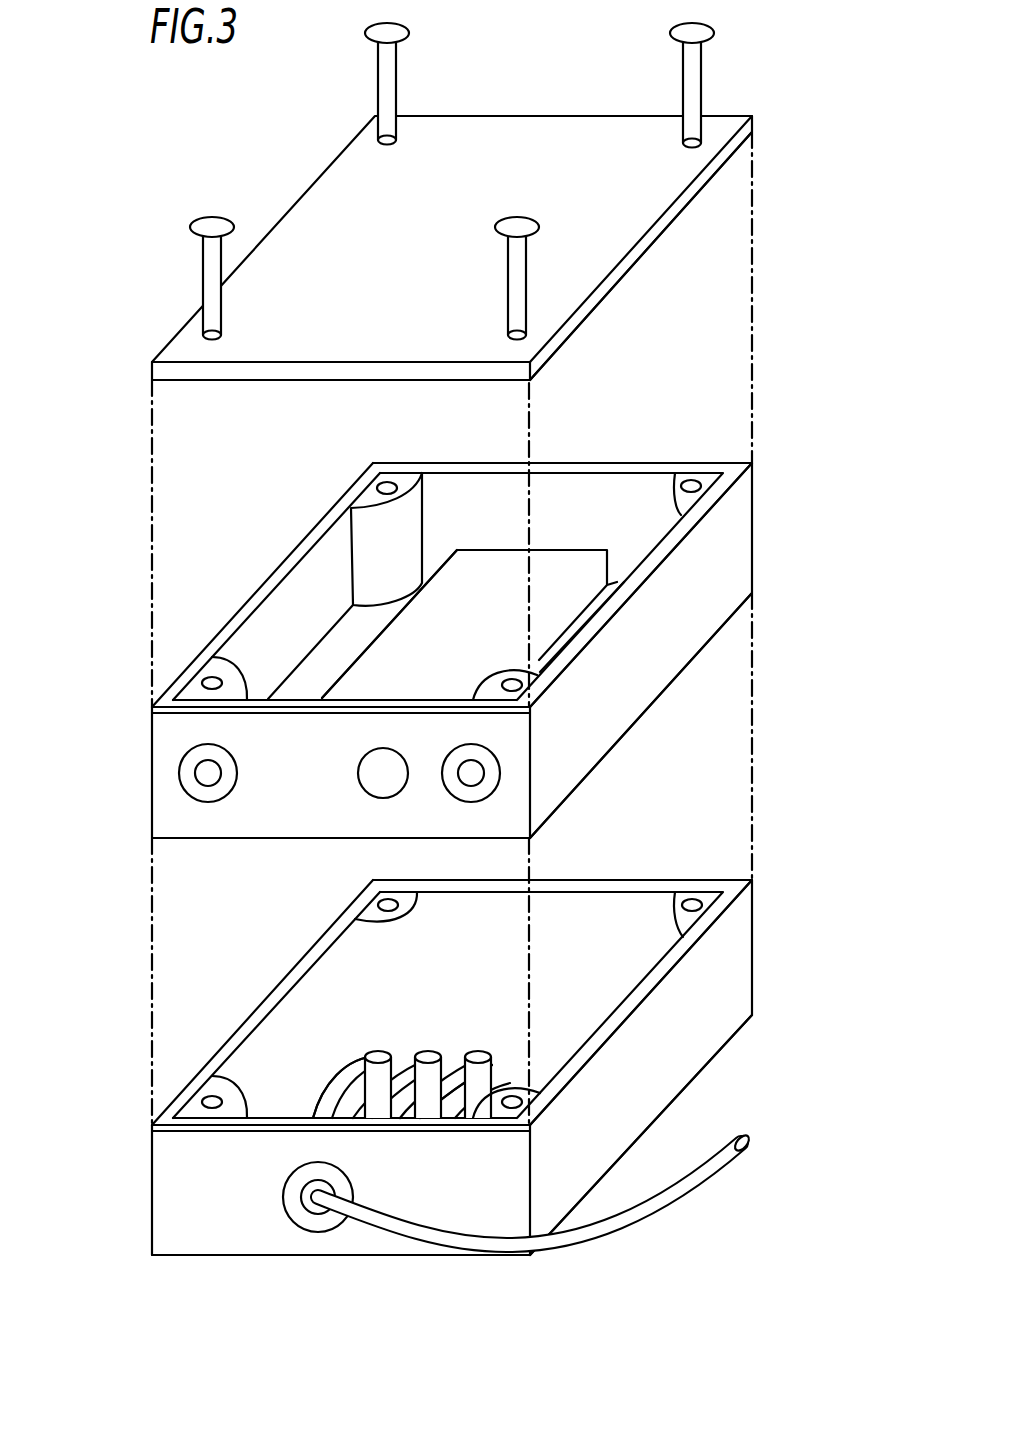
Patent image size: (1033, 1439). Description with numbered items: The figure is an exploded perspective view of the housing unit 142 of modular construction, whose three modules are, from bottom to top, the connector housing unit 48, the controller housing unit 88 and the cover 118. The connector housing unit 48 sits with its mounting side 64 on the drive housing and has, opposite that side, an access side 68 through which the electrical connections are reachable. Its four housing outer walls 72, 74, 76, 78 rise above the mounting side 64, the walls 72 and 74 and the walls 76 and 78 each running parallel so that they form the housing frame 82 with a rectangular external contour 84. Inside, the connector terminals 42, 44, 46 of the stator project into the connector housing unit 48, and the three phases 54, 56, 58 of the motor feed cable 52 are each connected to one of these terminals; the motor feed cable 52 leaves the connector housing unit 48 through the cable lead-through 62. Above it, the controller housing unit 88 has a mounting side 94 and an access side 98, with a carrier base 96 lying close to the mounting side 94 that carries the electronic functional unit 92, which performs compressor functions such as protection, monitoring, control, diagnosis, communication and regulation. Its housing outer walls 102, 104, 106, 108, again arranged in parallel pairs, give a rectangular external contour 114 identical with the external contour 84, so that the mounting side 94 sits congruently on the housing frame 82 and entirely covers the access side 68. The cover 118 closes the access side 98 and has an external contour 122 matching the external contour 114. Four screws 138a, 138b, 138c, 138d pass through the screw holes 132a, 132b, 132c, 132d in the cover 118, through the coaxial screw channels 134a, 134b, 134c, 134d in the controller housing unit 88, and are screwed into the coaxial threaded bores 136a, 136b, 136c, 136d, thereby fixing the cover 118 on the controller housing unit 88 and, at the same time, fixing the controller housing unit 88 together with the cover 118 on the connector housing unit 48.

The housing unit 142 is at (143, 197).
The cover 118 is at (607, 202).
The external contour 122 is at (642, 247).
The screw 138a is at (517, 269).
The screw 138b is at (697, 84).
The screw 138c is at (392, 84).
The screw 138d is at (210, 270).
The screw hole 132a is at (526, 333).
The screw hole 132b is at (703, 138).
The screw hole 132c is at (378, 138).
The screw hole 132d is at (204, 333).
The controller housing unit 88 is at (646, 658).
The housing outer wall 108 is at (616, 460).
The housing outer wall 102 is at (702, 608).
The external contour 114 is at (722, 559).
The housing outer wall 104 is at (285, 558).
The housing outer wall 106 is at (258, 808).
The mounting side 94 is at (562, 800).
The carrier base 96 is at (317, 680).
The electronic functional unit 92 is at (498, 567).
The access side 98 is at (325, 520).
The screw channel 134a is at (523, 688).
The screw channel 134b is at (702, 483).
The screw channel 134c is at (376, 486).
The screw channel 134d is at (202, 681).
The connector housing unit 48 is at (203, 1170).
The housing outer wall 78 is at (648, 878).
The housing outer wall 72 is at (693, 1030).
The housing frame 82 is at (718, 972).
The external contour 84 is at (662, 1073).
The access side 68 is at (288, 982).
The housing outer wall 74 is at (247, 1020).
The housing outer wall 76 is at (362, 1242).
The mounting side 64 is at (436, 1260).
The phase 54 is at (343, 1080).
The phase 56 is at (377, 1100).
The phase 58 is at (448, 1093).
The connector terminal 42 is at (377, 1052).
The connector terminal 44 is at (428, 1052).
The connector terminal 46 is at (478, 1052).
The threaded bore 136a is at (524, 1103).
The threaded bore 136b is at (703, 905).
The threaded bore 136c is at (378, 905).
The threaded bore 136d is at (202, 1101).
The cable lead-through 62 is at (300, 1220).
The motor feed cable 52 is at (707, 1175).